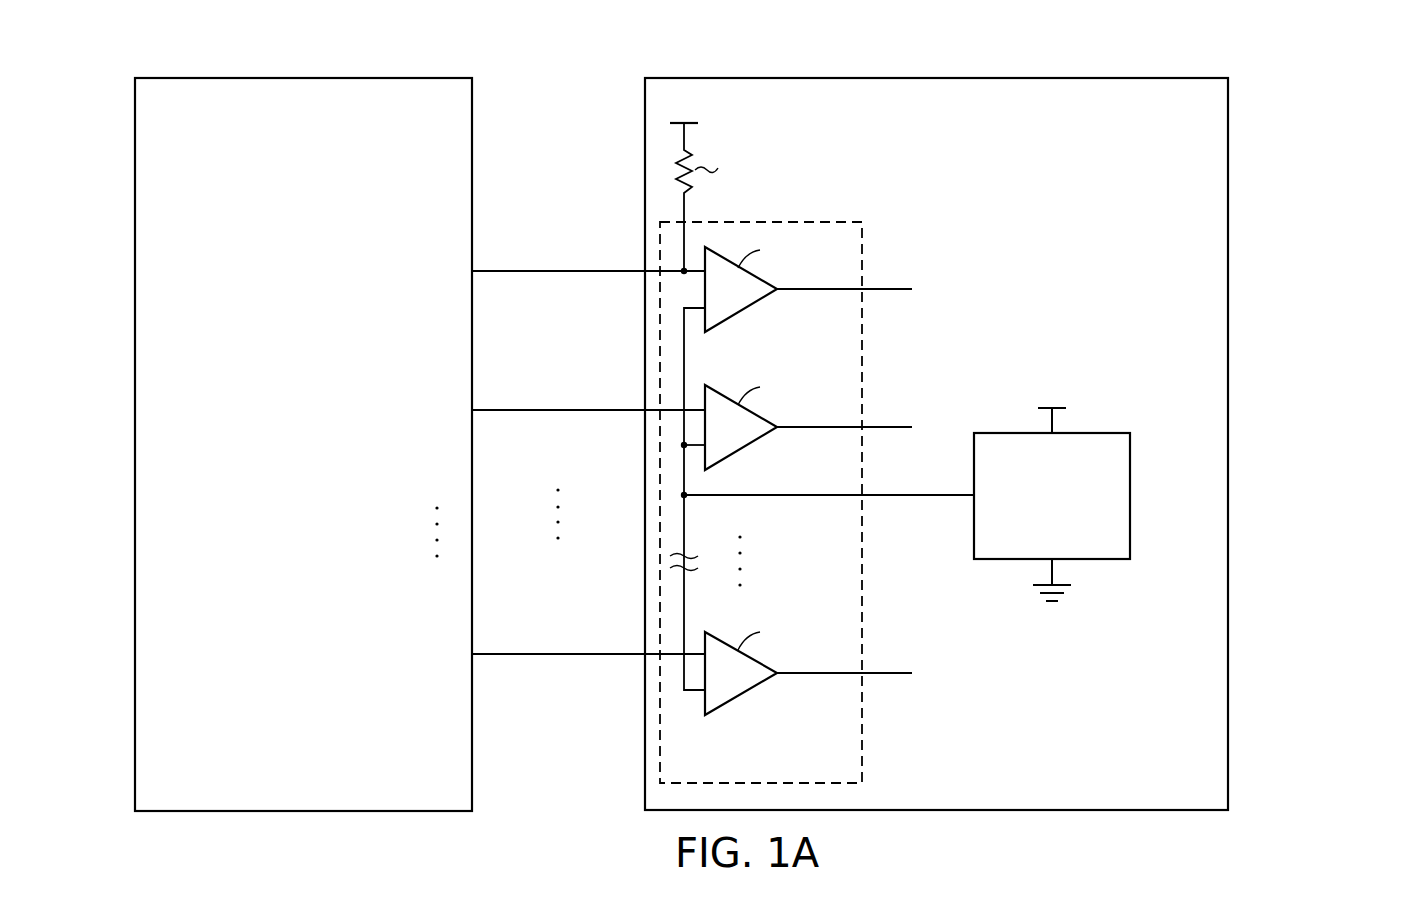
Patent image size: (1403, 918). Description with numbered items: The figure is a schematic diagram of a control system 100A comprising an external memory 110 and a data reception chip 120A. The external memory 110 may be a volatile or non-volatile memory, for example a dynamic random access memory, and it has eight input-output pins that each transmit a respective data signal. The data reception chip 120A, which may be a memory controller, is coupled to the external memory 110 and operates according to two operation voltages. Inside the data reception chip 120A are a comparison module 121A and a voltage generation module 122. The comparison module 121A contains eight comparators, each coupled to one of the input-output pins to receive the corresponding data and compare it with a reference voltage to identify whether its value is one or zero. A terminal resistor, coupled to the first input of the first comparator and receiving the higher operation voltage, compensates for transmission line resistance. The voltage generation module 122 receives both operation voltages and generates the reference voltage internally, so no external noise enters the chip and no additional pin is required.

The control system 100A is at (1297, 112).
The external memory 110 is at (136, 78).
The data reception chip 120A is at (646, 78).
The comparison module 121A is at (832, 222).
The voltage generation module 122 is at (1097, 433).